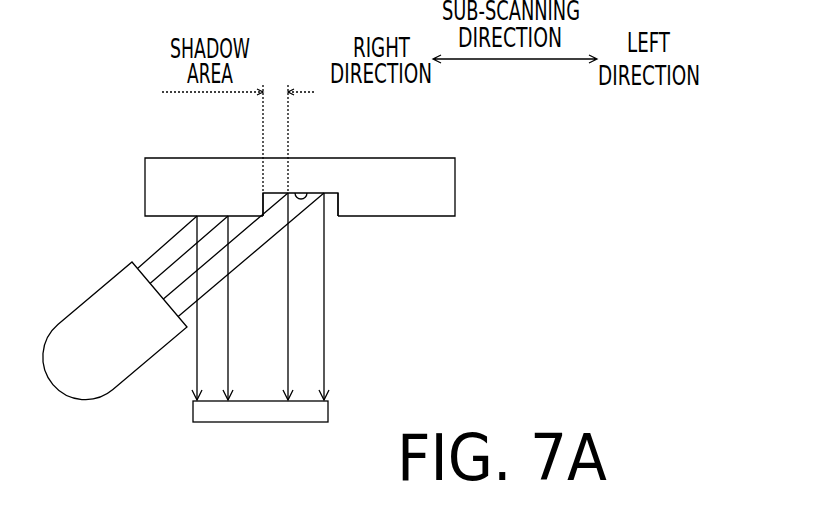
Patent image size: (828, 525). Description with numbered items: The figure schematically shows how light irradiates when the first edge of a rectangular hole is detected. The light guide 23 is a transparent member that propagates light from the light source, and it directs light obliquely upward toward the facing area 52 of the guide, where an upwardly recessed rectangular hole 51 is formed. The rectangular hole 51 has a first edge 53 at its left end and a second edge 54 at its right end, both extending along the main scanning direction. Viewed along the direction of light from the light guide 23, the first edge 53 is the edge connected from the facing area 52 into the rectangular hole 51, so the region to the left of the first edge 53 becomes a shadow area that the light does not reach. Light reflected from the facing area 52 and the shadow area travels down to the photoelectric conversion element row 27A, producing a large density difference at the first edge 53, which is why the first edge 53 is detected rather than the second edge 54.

The light guide 23 is at (67, 402).
The photoelectric conversion element row 27A is at (258, 423).
The rectangular hole 51 is at (301, 193).
The facing area 52 is at (397, 216).
The first edge 53 is at (263, 216).
The second edge 54 is at (336, 216).